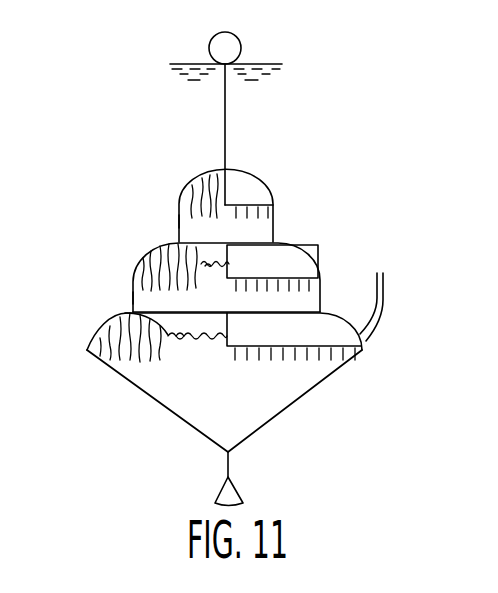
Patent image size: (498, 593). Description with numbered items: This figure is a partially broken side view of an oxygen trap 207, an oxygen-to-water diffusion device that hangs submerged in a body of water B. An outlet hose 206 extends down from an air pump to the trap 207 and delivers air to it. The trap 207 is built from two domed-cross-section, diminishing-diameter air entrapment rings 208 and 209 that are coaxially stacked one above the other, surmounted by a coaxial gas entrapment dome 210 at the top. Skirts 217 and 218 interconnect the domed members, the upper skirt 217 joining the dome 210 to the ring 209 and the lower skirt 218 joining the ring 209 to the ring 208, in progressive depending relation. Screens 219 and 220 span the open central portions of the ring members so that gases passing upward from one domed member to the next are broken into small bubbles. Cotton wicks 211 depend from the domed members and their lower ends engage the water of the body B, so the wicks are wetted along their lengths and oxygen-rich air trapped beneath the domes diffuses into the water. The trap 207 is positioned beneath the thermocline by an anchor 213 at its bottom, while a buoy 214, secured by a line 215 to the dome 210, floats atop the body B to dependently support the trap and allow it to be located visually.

The outlet hose 206 is at (384, 297).
The oxygen trap 207 is at (322, 251).
The air entrapment ring 208 is at (224, 382).
The air entrapment ring 209 is at (272, 268).
The gas entrapment dome 210 is at (253, 182).
The cotton wicks 211 is at (140, 352).
The anchor 213 is at (253, 479).
The buoy 214 is at (230, 40).
The line 215 is at (227, 133).
The skirt 217 is at (179, 220).
The skirt 218 is at (133, 298).
The screen 219 is at (213, 268).
The screen 220 is at (203, 338).
The body of water B is at (268, 73).